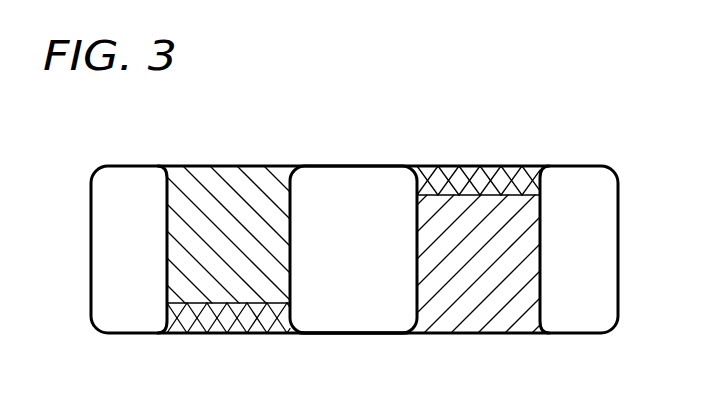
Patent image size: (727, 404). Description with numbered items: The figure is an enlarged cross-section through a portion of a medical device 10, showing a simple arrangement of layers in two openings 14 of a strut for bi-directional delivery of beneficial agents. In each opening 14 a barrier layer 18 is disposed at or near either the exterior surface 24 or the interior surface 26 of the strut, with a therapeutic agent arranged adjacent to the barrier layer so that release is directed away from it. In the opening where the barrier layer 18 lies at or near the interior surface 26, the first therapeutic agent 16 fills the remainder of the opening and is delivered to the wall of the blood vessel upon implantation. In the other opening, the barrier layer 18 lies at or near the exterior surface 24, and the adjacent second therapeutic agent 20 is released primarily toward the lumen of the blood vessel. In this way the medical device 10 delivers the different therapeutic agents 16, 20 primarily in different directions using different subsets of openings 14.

The medical device 10 is at (600, 94).
The opening 14 is at (215, 125).
The first therapeutic agent 16 is at (245, 190).
The barrier layer 18 is at (493, 172).
The second therapeutic agent 20 is at (517, 312).
The exterior surface 24 is at (344, 166).
The interior surface 26 is at (350, 334).